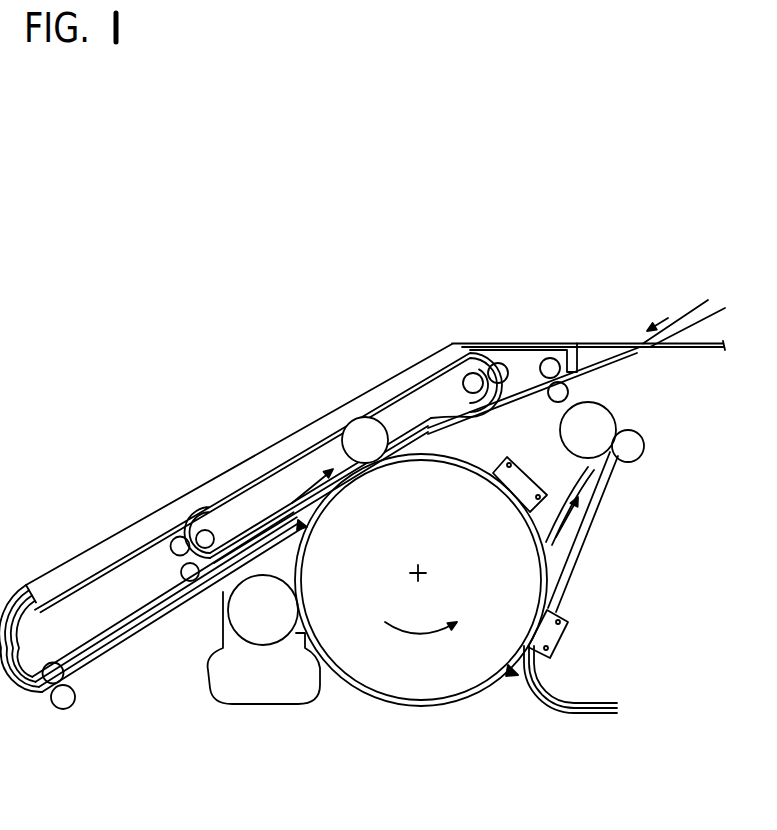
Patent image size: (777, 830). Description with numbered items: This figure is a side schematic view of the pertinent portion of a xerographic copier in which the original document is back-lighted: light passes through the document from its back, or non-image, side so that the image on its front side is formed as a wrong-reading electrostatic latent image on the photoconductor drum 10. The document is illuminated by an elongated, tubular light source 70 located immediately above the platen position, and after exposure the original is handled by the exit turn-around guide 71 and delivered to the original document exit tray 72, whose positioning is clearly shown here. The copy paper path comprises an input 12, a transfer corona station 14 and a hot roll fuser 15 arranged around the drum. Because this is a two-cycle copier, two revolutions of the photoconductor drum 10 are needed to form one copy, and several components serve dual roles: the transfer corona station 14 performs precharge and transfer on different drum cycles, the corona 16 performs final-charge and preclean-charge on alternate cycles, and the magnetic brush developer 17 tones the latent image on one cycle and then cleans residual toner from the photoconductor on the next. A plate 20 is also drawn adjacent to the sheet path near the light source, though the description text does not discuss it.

The photoconductor drum 10 is at (378, 704).
The input 12 is at (588, 707).
The transfer corona station 14 is at (524, 616).
The hot roll fuser 15 is at (625, 416).
The corona 16 is at (505, 460).
The magnetic brush developer 17 is at (222, 628).
The sheet feed plate 20 is at (590, 363).
The elongated, tubular light source 70 is at (363, 416).
The exit turn-around guide 71 is at (17, 677).
The original document exit tray 72 is at (115, 563).